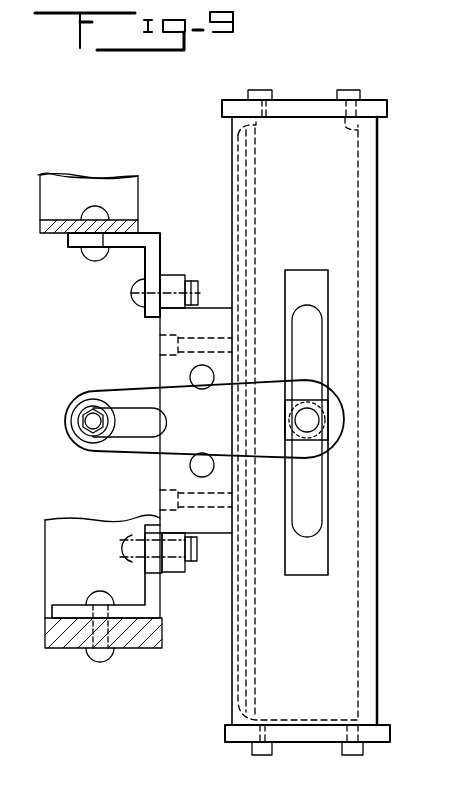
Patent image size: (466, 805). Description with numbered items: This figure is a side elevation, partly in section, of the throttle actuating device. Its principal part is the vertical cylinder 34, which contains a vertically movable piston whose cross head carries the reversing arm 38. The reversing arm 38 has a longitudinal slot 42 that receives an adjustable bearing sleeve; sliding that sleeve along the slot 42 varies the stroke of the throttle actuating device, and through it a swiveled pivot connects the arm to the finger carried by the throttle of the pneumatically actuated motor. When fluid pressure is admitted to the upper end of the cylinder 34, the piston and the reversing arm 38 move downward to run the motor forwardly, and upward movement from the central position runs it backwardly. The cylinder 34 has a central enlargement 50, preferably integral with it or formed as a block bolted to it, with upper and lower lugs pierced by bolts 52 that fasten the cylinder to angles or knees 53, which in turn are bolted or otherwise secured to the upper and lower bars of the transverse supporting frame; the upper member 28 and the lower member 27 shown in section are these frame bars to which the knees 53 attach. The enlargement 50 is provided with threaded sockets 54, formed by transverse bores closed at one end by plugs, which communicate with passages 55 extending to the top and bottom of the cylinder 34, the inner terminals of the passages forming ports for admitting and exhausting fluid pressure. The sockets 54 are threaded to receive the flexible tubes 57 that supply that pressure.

The base plate 27 is at (85, 648).
The support block 28 is at (140, 223).
The cylinder 34 is at (378, 548).
The reversing arm 38 is at (465, 408).
The longitudinal slot 42 is at (135, 428).
The central enlargement 50 is at (168, 378).
The bolts 52 is at (135, 552).
The angles or knees 53 is at (150, 612).
The threaded sockets 54 is at (190, 372).
The passages 55 is at (169, 305).
The flexible tubes 57 is at (175, 573).